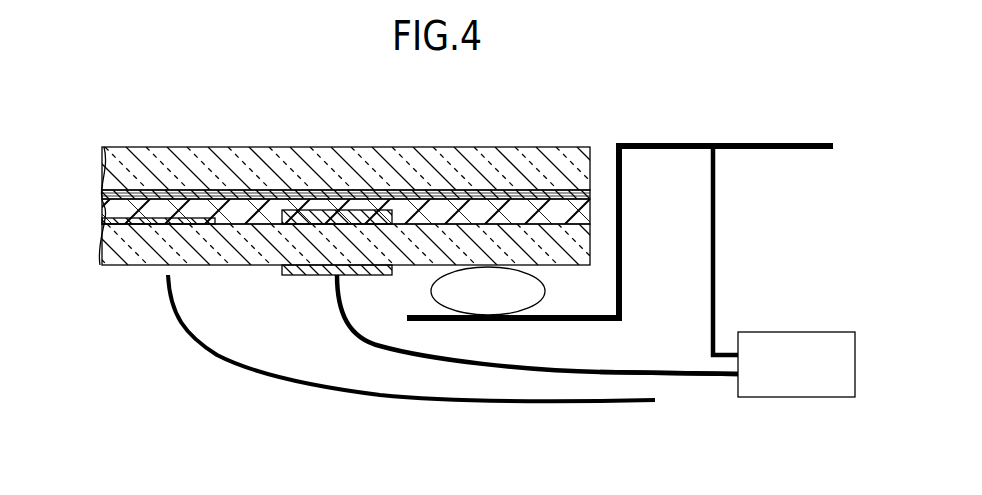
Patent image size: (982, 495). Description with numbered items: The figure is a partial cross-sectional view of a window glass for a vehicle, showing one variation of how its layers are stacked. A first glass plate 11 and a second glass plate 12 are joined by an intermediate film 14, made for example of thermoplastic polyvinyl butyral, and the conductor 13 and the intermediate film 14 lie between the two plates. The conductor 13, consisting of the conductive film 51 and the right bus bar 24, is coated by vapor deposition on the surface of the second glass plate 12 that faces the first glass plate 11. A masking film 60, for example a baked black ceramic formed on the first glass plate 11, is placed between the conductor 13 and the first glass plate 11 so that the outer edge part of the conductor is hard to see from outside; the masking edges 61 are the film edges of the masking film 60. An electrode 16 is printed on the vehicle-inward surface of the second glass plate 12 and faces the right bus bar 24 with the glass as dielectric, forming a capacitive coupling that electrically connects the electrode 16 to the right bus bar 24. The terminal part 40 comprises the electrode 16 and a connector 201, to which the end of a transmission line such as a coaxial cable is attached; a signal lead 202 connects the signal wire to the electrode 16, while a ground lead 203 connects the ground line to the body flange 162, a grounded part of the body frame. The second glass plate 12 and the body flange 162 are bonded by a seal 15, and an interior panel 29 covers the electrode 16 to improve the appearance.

The first glass plate 11 is at (110, 171).
The second glass plate 12 is at (110, 238).
The conductor 13 is at (358, 211).
The intermediate film 14 is at (110, 195).
The seal 15 is at (545, 286).
The electrode 16 is at (381, 276).
The right bus bar 24 is at (330, 211).
The interior panel 29 is at (293, 376).
The terminal part 40 is at (327, 298).
The conductive film 51 is at (105, 222).
The masking film 60 is at (264, 196).
The masking edges 61 is at (167, 195).
The body flange 162 is at (790, 143).
The connector 201 is at (790, 332).
The signal lead 202 is at (592, 371).
The ground lead 203 is at (717, 230).